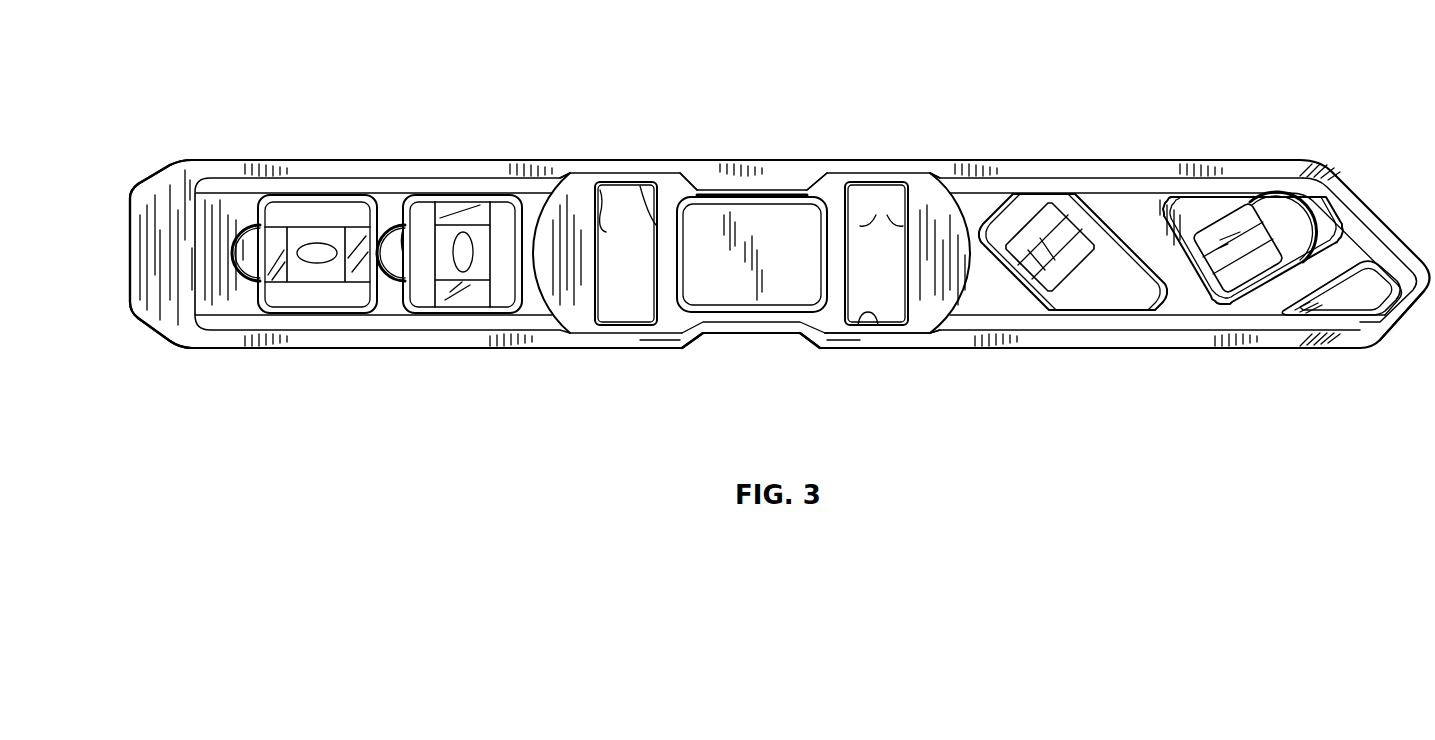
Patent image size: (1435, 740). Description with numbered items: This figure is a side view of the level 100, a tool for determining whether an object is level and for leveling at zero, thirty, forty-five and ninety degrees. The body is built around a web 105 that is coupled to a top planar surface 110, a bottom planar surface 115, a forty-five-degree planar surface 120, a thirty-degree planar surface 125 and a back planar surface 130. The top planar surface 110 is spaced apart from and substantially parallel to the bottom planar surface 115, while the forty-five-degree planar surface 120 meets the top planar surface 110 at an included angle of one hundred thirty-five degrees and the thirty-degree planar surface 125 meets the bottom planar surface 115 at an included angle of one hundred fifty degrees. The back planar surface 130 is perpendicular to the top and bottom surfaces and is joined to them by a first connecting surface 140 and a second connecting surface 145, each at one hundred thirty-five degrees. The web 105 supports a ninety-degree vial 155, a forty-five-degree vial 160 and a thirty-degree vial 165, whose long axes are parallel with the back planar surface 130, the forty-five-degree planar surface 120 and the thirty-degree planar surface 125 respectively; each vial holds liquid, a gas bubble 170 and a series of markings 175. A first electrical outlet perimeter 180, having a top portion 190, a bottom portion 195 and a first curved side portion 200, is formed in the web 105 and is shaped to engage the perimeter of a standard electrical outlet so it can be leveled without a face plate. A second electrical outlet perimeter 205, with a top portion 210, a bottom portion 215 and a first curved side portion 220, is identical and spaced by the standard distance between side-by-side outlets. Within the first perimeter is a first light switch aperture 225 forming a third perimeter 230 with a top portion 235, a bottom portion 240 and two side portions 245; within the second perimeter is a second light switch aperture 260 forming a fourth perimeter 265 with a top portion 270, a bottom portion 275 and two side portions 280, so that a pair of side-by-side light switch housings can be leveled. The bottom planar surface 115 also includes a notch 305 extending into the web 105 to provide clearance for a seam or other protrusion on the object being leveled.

The level 100 is at (1000, 42).
The web 105 is at (756, 222).
The top planar surface 110 is at (390, 158).
The bottom planar surface 115 is at (1087, 348).
The 45-degree planar surface 120 is at (1364, 208).
The 30-degree planar surface 125 is at (1398, 336).
The back planar surface 130 is at (128, 212).
The first connecting surface 140 is at (166, 172).
The second connecting surface 145 is at (157, 335).
The 90-degree vial 155 is at (432, 210).
The 45-degree vial 160 is at (1088, 205).
The 30-degree vial 165 is at (1171, 214).
The gas bubble 170 is at (1013, 208).
The markings 175 is at (268, 216).
The first electrical outlet perimeter 180 is at (656, 338).
The top portion 190 is at (667, 172).
The bottom portion 195 is at (592, 335).
The first curved side portion 200 is at (563, 170).
The second electrical outlet perimeter 205 is at (834, 338).
The top portion 210 is at (910, 173).
The bottom portion 215 is at (913, 338).
The first curved side portion 220 is at (828, 173).
The first light switch aperture 225 is at (658, 297).
The third perimeter 230 is at (591, 292).
The top portion 235 is at (648, 196).
The bottom portion 240 is at (605, 318).
The side portions 245 is at (624, 206).
The second light switch aperture 260 is at (866, 244).
The fourth perimeter 265 is at (840, 284).
The top portion 270 is at (853, 200).
The bottom portion 275 is at (868, 316).
The side portions 280 is at (887, 215).
The notch 305 is at (722, 337).